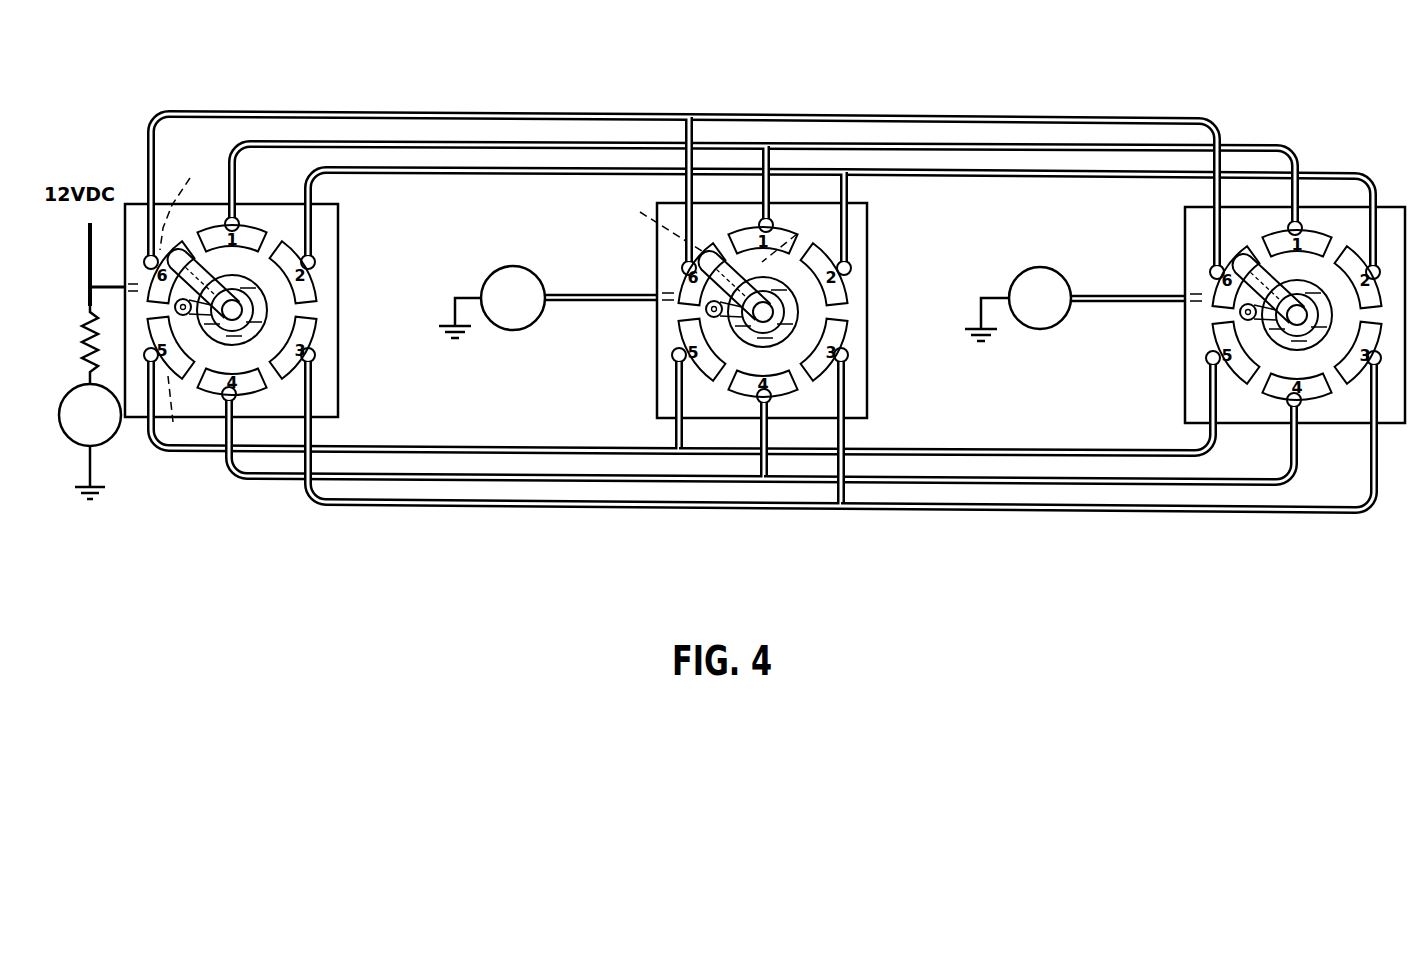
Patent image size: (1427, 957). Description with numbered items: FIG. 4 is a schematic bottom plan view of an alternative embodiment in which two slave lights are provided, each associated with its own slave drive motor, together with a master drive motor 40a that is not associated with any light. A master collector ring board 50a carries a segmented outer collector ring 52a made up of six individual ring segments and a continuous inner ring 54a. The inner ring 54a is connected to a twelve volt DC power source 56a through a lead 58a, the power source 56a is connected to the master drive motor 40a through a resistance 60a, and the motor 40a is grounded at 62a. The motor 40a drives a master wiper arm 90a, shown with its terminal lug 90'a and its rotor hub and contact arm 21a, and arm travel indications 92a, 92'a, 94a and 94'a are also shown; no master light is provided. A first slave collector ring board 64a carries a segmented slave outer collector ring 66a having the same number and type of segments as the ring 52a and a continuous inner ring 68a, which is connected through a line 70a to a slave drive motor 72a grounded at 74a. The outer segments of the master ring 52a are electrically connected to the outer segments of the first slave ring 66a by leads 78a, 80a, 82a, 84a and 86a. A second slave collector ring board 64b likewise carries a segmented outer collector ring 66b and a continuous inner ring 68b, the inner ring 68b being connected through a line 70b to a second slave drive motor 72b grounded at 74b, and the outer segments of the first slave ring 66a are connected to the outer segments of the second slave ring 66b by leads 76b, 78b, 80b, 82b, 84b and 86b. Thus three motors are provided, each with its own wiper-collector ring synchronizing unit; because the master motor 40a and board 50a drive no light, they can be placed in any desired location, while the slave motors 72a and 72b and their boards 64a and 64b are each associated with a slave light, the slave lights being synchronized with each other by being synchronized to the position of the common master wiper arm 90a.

The rotor hub and contact arm 21a is at (285, 285).
The master drive motor 40a is at (102, 445).
The master collector ring board 50a is at (336, 377).
The segmented outer collector ring 52a is at (275, 291).
The continuous inner ring 54a is at (300, 310).
The power source 56a is at (88, 224).
The lead 58a is at (90, 284).
The resistance 60a is at (82, 350).
The ground 62a is at (100, 503).
The first slave collector ring board 64a is at (868, 228).
The second slave collector ring board 64b is at (1393, 212).
The segmented slave outer collector ring 66a is at (811, 312).
The segmented outer collector ring 66b is at (1251, 315).
The continuous inner ring 68a is at (671, 325).
The continuous inner ring 68b is at (1206, 337).
The line 70a is at (608, 291).
The line 70b is at (1126, 294).
The slave drive motor 72a is at (525, 270).
The second slave drive motor 72b is at (1048, 247).
The ground 74a is at (462, 336).
The ground 74b is at (978, 340).
The lead 76b is at (1040, 143).
The lead 78a is at (474, 140).
The lead 78b is at (1074, 178).
The lead 80a is at (432, 507).
The lead 80b is at (1152, 514).
The lead 82a is at (522, 473).
The lead 82b is at (972, 477).
The lead 84a is at (437, 445).
The lead 84b is at (1080, 449).
The lead 86a is at (321, 110).
The lead 86b is at (915, 114).
The master wiper arm 90a is at (240, 228).
The terminal lug 90'a is at (795, 205).
The arm travel indication 92a is at (184, 199).
The arm travel indication 92'a is at (651, 223).
The arm travel indication 94a is at (188, 410).
The arm travel indication 94'a is at (802, 235).